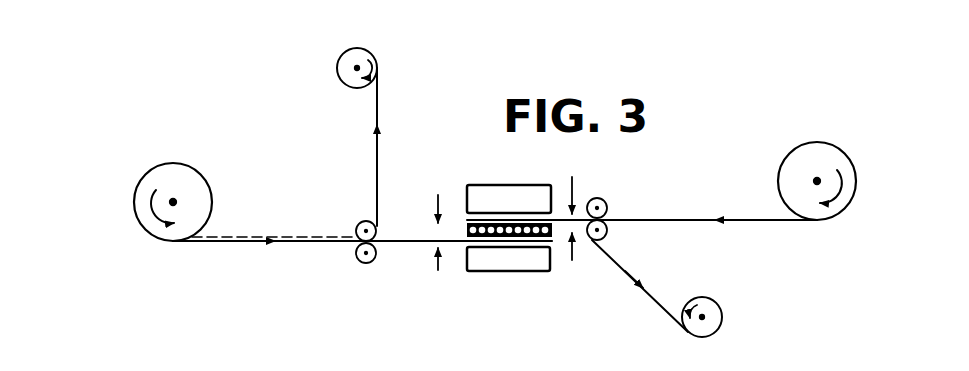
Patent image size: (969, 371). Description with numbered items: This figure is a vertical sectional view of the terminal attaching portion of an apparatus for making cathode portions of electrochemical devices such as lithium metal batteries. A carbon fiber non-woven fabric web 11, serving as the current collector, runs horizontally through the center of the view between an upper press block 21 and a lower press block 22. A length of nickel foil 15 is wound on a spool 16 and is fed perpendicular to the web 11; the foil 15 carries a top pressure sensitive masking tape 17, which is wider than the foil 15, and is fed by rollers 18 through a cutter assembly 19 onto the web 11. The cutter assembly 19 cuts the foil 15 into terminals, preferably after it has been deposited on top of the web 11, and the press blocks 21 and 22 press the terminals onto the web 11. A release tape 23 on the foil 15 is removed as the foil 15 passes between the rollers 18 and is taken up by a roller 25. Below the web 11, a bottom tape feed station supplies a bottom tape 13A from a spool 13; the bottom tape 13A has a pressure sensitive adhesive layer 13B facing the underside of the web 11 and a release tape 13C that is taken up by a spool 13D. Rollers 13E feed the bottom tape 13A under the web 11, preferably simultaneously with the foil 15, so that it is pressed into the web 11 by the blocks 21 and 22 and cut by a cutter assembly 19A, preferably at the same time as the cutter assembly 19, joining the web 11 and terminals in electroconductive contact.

The carbon fiber non-woven fabric web 11 is at (468, 226).
The spool 13 is at (173, 172).
The bottom tape 13A is at (242, 245).
The pressure sensitive adhesive layer 13B is at (400, 241).
The release tape 13C is at (252, 236).
The spool 13D is at (371, 58).
The rollers 13E is at (366, 264).
The nickel foil 15 is at (757, 224).
The spool 16 is at (840, 195).
The pressure sensitive masking tape 17 is at (668, 218).
The rollers 18 is at (603, 198).
The cutter assembly 19 is at (572, 260).
The cutter assembly 19A is at (438, 270).
The press block 21 is at (497, 200).
The press block 22 is at (507, 262).
The release tape 23 is at (657, 300).
The roller 25 is at (717, 312).